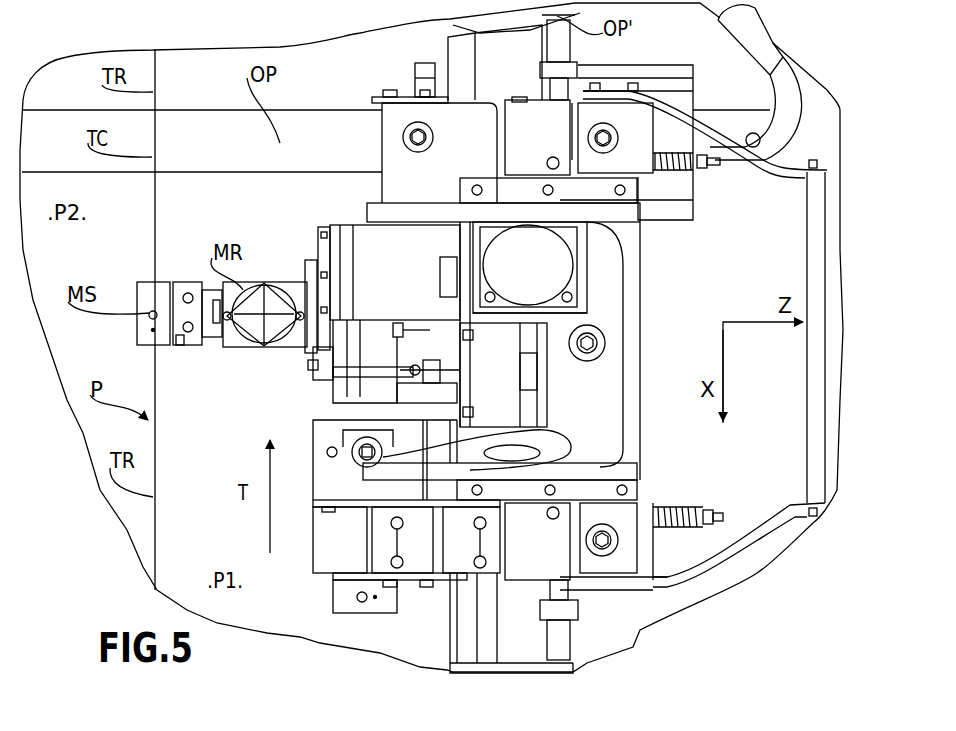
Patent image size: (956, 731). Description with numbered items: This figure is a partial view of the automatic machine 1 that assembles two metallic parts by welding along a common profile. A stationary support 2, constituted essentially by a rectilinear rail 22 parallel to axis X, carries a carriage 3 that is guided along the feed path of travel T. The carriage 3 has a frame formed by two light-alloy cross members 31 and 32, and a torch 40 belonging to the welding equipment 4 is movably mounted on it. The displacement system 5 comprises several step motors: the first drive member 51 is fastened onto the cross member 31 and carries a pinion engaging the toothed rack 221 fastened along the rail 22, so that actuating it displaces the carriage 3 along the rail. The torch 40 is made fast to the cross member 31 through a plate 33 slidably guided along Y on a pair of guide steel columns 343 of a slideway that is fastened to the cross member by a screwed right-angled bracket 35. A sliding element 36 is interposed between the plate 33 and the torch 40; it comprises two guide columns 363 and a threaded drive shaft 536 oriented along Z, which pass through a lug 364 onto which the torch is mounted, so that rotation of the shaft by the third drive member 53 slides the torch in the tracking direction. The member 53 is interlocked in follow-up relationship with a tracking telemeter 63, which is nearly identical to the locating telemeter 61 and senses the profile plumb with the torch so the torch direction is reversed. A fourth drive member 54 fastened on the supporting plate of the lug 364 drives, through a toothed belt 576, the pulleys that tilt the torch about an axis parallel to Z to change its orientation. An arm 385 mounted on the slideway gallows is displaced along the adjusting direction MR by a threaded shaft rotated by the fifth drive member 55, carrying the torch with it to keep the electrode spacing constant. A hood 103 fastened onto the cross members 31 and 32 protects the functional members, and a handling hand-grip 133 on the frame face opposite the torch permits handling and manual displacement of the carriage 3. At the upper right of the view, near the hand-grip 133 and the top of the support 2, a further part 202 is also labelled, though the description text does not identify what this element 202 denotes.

The automatic machine 1 is at (714, 614).
The support 2 is at (386, 60).
The carriage 3 is at (750, 468).
The welding equipment 4 is at (200, 217).
The displacement system 5 is at (657, 251).
The rail 22 is at (523, 637).
The cross member 31 is at (610, 408).
The cross member 32 is at (385, 115).
The plate 33 is at (316, 425).
The screwed right-angled bracket 35 is at (367, 545).
The sliding element 36 is at (315, 393).
The torch 40 is at (190, 349).
The first drive member 51 is at (555, 265).
The third drive member 53 is at (497, 390).
The fourth drive member 54 is at (373, 240).
The fifth drive member 55 is at (262, 290).
The locating telemeter 61 is at (377, 607).
The tracking telemeter 63 is at (143, 293).
The hood 103 is at (623, 248).
The handling hand-grip 133 is at (807, 242).
The handle 202 is at (685, 103).
The toothed rack 221 is at (533, 622).
The guide steel columns 343 is at (520, 438).
The guide columns 363 is at (388, 357).
The lug 364 is at (327, 250).
The arm 385 is at (187, 283).
The threaded drive shaft 536 is at (433, 363).
The toothed belt 576 is at (318, 276).